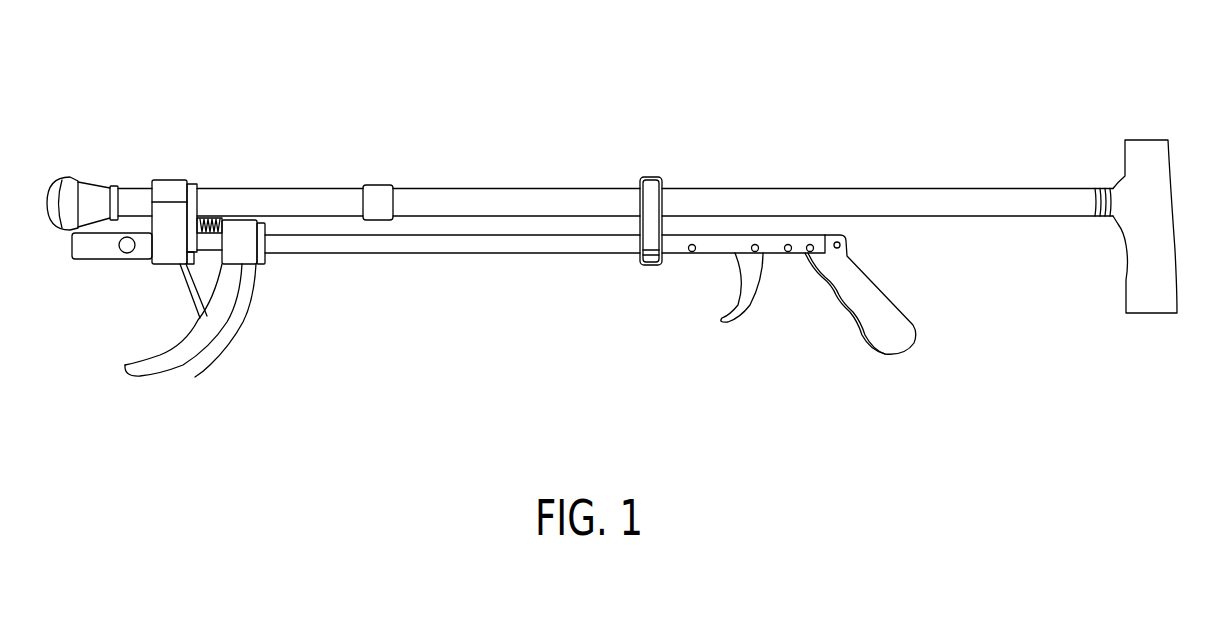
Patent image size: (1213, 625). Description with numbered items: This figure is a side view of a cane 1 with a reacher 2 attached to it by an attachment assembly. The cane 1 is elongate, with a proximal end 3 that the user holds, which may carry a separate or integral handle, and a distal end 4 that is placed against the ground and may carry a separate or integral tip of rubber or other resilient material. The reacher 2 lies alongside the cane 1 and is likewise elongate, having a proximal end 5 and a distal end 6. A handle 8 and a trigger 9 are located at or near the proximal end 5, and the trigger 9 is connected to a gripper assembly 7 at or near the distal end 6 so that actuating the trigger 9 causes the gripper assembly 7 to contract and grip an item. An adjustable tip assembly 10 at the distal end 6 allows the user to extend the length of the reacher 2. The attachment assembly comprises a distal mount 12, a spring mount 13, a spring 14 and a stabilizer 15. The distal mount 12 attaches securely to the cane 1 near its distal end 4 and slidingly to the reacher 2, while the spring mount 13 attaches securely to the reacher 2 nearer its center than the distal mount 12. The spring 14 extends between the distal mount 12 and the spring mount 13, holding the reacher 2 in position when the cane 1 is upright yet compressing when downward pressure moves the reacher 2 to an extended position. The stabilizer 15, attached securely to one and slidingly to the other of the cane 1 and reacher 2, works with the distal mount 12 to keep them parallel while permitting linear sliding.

The cane 1 is at (541, 195).
The reacher 2 is at (528, 253).
The proximal end 3 is at (1148, 140).
The distal end 4 is at (73, 176).
The proximal end 5 is at (800, 255).
The distal end 6 is at (77, 259).
The gripper assembly 7 is at (187, 357).
The handle 8 is at (890, 353).
The trigger 9 is at (742, 325).
The adjustable tip assembly 10 is at (103, 259).
The distal mount 12 is at (168, 150).
The spring mount 13 is at (270, 155).
The spring 14 is at (221, 183).
The stabilizer 15 is at (699, 86).